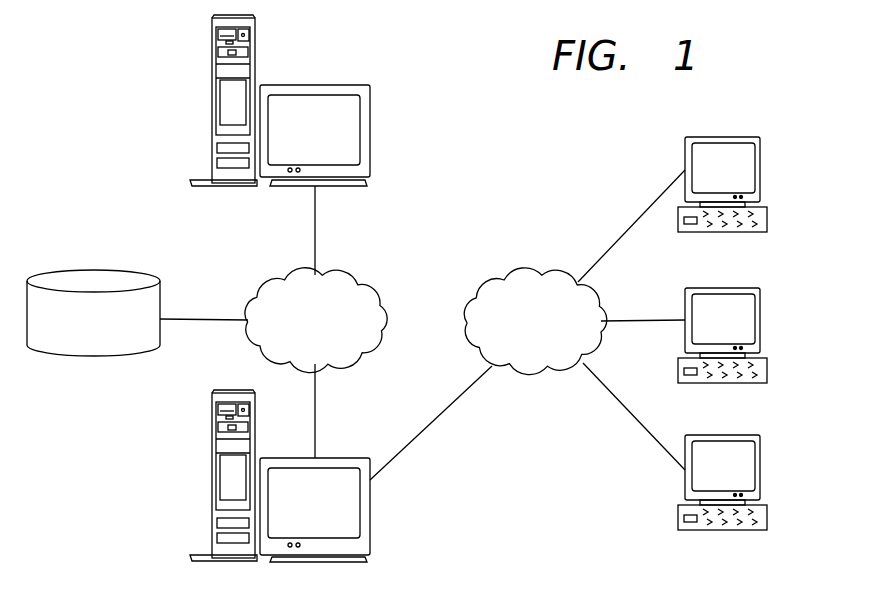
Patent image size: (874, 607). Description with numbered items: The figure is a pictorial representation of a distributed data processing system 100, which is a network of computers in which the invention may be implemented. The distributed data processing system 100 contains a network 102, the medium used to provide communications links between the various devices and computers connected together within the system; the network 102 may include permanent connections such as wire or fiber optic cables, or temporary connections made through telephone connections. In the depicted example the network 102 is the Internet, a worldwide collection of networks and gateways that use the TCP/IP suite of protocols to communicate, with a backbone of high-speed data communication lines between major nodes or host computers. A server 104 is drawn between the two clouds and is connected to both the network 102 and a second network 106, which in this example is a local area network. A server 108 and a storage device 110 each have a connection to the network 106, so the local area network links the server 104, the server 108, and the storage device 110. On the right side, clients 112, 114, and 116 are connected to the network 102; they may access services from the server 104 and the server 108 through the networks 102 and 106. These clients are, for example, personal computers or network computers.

The distributed data processing system 100 is at (594, 150).
The network 102 is at (516, 349).
The server 104 is at (293, 521).
The network 106 is at (336, 349).
The server 108 is at (293, 144).
The storage device 110 is at (72, 276).
The client 112 is at (760, 170).
The client 114 is at (760, 320).
The client 116 is at (760, 470).